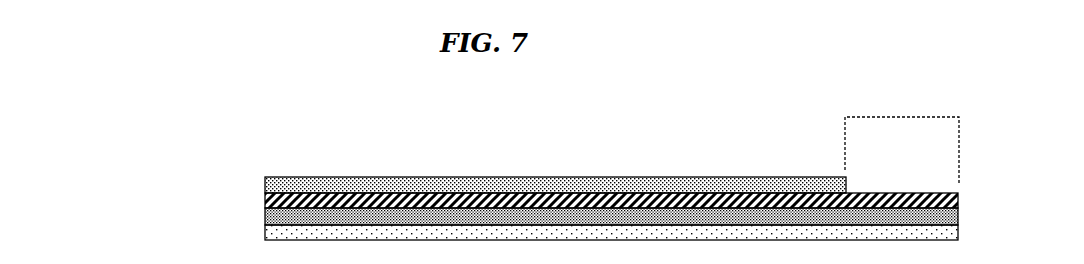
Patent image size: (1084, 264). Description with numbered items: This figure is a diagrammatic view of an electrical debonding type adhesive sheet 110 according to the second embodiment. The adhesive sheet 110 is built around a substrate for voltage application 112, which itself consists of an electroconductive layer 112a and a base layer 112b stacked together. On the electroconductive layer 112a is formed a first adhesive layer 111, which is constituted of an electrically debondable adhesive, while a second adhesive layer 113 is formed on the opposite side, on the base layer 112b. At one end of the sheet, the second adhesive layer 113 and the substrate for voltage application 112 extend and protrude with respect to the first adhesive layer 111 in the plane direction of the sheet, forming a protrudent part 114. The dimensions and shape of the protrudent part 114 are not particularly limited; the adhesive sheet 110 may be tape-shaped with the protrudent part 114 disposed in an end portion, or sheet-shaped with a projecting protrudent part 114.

The electrical debonding type adhesive sheet 110 is at (330, 142).
The first adhesive layer 111 is at (265, 183).
The substrate for voltage application 112 is at (112, 164).
The electroconductive layer 112a is at (265, 198).
The base layer 112b is at (265, 214).
The second adhesive layer 113 is at (265, 232).
The protrudent part 114 is at (902, 117).